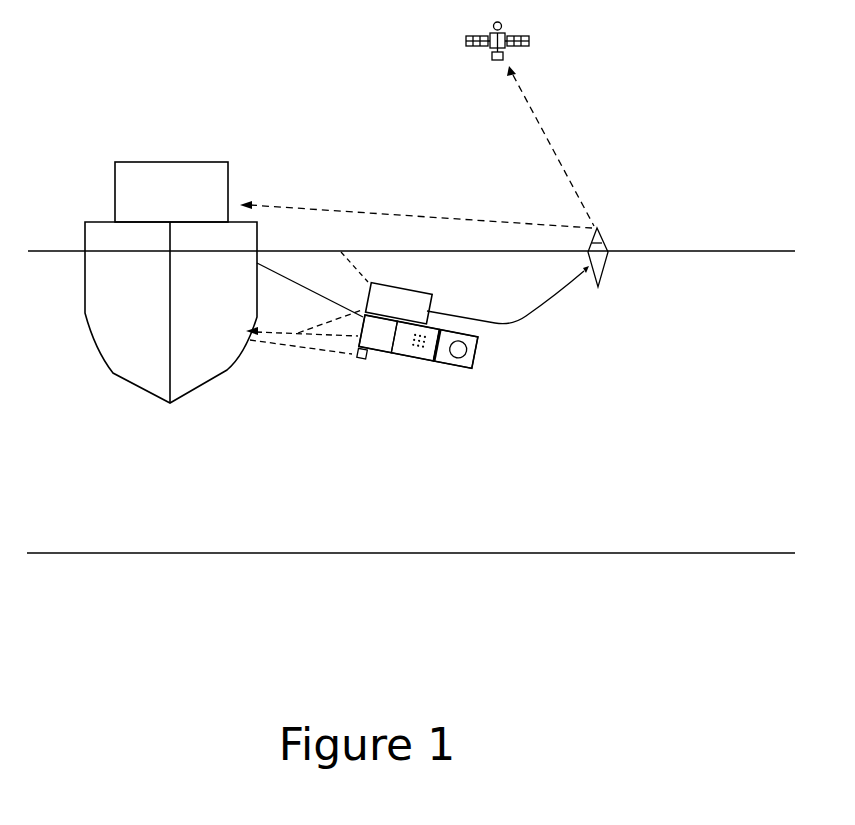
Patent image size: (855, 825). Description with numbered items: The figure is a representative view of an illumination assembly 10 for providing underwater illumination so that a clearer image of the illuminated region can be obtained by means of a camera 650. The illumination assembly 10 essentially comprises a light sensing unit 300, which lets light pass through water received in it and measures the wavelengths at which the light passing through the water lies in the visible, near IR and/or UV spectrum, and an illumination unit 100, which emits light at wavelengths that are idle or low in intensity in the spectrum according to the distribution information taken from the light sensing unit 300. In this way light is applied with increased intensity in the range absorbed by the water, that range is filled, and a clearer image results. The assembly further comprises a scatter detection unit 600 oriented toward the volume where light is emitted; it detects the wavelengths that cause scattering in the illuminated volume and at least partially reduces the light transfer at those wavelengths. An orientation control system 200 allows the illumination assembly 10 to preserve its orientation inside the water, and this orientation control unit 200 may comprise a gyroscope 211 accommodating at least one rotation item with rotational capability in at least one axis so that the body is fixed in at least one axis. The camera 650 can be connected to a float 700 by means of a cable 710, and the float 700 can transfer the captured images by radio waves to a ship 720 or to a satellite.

The illumination assembly 10 is at (522, 357).
The illumination unit 100 is at (382, 336).
The orientation control system 200 is at (472, 366).
The gyroscope 211 is at (478, 360).
The light sensing unit 300 is at (417, 356).
The scatter detection unit 600 is at (399, 303).
The camera 650 is at (361, 358).
The float 700 is at (604, 240).
The cable 710 is at (513, 317).
The ship 720 is at (219, 162).